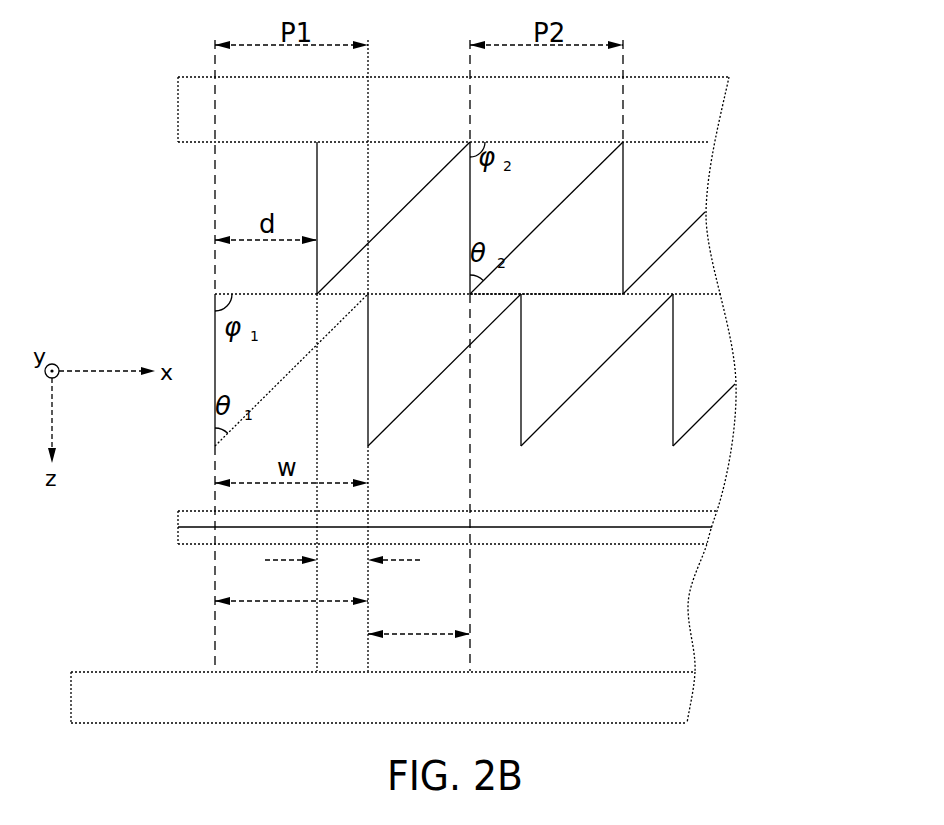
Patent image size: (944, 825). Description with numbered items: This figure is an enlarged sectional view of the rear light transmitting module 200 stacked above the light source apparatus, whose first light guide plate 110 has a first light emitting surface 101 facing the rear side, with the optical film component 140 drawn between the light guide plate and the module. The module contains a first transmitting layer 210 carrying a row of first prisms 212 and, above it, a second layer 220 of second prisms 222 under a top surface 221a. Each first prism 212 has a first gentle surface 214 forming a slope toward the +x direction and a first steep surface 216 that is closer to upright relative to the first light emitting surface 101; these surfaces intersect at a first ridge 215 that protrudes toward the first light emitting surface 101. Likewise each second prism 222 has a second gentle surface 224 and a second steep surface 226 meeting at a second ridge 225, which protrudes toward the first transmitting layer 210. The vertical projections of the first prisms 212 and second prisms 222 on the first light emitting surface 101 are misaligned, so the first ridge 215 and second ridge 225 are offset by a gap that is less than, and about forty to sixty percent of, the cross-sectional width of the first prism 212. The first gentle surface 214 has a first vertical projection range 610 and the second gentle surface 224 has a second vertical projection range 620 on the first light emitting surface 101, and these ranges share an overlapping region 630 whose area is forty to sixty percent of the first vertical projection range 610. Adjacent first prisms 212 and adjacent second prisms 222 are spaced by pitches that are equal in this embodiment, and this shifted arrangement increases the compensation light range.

The rear light transmitting module 200 is at (183, 28).
The top surface layer 221a is at (707, 99).
The second microstructure layer 220 is at (813, 137).
The second prism 222 is at (590, 155).
The second gentle surface 224 is at (583, 186).
The second steep surface 226 is at (470, 220).
The second ridge 225 is at (470, 294).
The first transmitting layer 210 is at (813, 323).
The first prism 212 is at (592, 343).
The first gentle surface 214 is at (603, 370).
The first steep surface 216 is at (521, 402).
The first ridge 215 is at (521, 446).
The optical film component 140 is at (722, 511).
The first light guide plate 110 is at (617, 711).
The first light emitting surface 101 is at (150, 672).
The first vertical projection range 610 is at (291, 616).
The second vertical projection range 620 is at (419, 648).
The overlapping region 630 is at (342, 576).